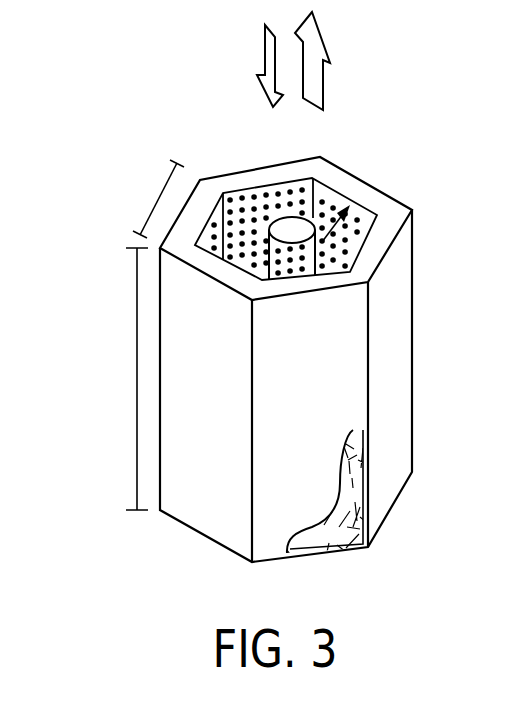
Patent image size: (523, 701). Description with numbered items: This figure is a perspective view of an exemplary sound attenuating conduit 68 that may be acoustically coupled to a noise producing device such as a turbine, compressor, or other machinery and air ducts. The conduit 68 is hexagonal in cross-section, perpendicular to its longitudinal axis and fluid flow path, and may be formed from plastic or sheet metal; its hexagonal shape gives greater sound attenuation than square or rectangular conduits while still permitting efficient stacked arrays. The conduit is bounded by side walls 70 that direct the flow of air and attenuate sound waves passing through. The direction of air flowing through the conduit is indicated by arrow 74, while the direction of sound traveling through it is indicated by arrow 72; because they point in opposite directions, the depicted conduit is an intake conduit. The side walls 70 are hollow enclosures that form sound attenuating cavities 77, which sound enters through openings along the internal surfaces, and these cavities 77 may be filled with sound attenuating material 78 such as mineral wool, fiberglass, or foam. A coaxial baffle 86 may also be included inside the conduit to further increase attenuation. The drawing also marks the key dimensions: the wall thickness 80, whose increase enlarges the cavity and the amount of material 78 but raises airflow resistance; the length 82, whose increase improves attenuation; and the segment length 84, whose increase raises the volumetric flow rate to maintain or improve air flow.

The sound attenuating conduit 68 is at (133, 78).
The side walls 70 is at (217, 183).
The arrow indicating direction of sound 72 is at (318, 82).
The arrow indicating direction of air flow 74 is at (267, 53).
The sound attenuating cavities 77 is at (363, 488).
The sound attenuating material 78 is at (343, 548).
The wall thickness 80 is at (367, 180).
The length 82 is at (135, 378).
The segment length 84 is at (158, 200).
The coaxial baffle 86 is at (288, 224).